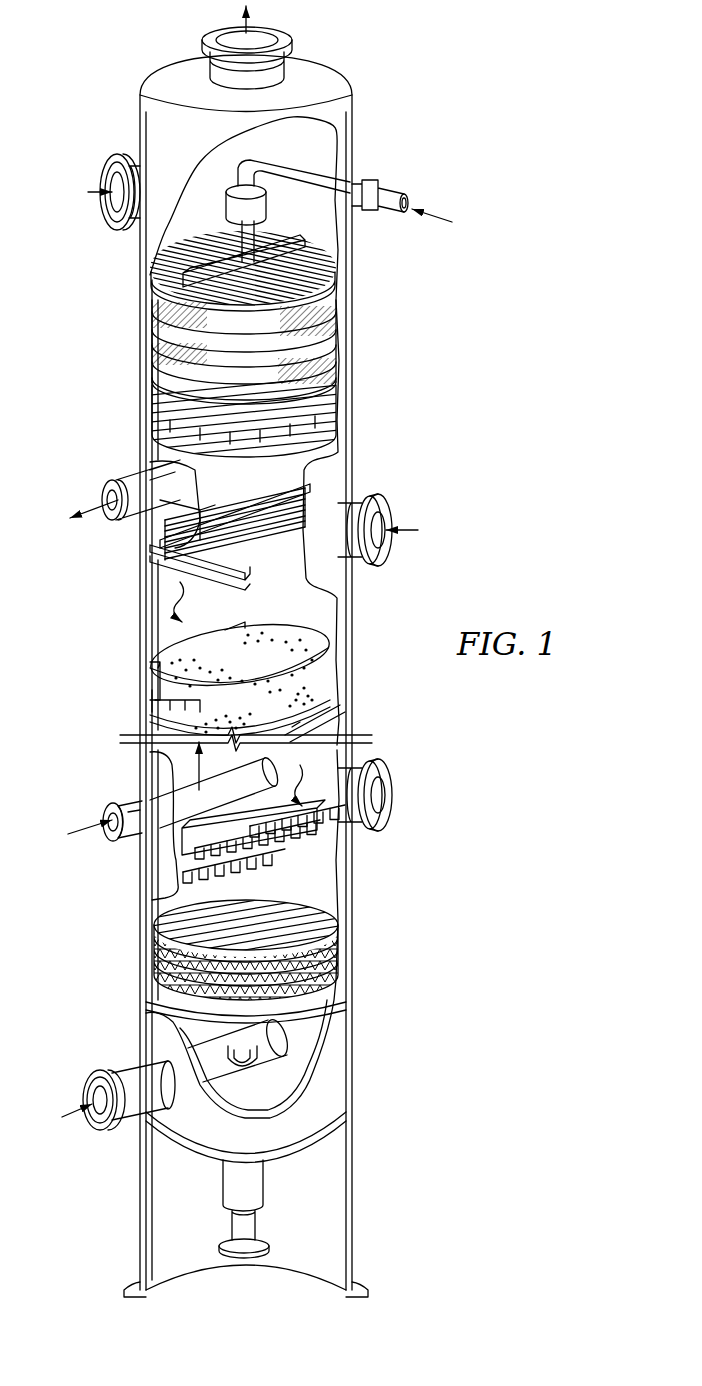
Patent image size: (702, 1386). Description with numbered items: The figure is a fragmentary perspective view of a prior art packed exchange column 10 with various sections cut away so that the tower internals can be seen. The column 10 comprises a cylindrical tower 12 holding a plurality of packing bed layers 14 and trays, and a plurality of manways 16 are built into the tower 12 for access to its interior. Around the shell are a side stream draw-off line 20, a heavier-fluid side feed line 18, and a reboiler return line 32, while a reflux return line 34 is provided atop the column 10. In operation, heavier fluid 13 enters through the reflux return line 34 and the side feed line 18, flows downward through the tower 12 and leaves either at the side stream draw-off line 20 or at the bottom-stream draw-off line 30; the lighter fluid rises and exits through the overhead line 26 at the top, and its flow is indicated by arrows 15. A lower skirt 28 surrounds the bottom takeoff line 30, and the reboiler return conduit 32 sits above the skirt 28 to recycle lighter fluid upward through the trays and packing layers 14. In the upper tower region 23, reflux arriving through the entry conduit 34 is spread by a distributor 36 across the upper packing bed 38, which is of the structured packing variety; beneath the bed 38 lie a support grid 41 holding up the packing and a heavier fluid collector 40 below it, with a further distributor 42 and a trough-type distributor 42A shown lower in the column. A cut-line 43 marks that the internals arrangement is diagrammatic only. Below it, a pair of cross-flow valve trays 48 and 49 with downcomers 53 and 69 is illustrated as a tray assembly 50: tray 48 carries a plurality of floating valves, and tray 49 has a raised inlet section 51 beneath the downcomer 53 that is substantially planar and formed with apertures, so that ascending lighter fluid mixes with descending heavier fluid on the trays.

The exchange column 10 is at (506, 312).
The cylindrical tower 12 is at (355, 125).
The heavier fluid 13 is at (430, 214).
The packing bed layers 14 is at (344, 327).
The vapor stream 15 is at (248, 18).
The manways 16 is at (108, 167).
The heavier-fluid side feed line 18 is at (104, 806).
The side stream draw-off line 20 is at (136, 478).
The upper tower region 23 is at (122, 350).
The overhead line 26 is at (205, 37).
The lower skirt 28 is at (352, 1228).
The bottom-stream draw-off line 30 is at (266, 1182).
The reboiler return line 32 is at (122, 1068).
The reflux return line 34 is at (368, 186).
The distributor 36 is at (160, 266).
The upper packing bed 38 is at (122, 302).
The heavier fluid collector 40 is at (340, 426).
The support grid 41 is at (344, 380).
The distributor trough 42 is at (150, 556).
The distributor trough 42A is at (344, 856).
The cut-line 43 is at (380, 736).
The tray 48 is at (280, 636).
The tray 49 is at (255, 704).
The tray 50 is at (330, 638).
The raised inlet section 51 is at (150, 716).
The downcomer 53 is at (150, 686).
The downcomer 69 is at (320, 732).